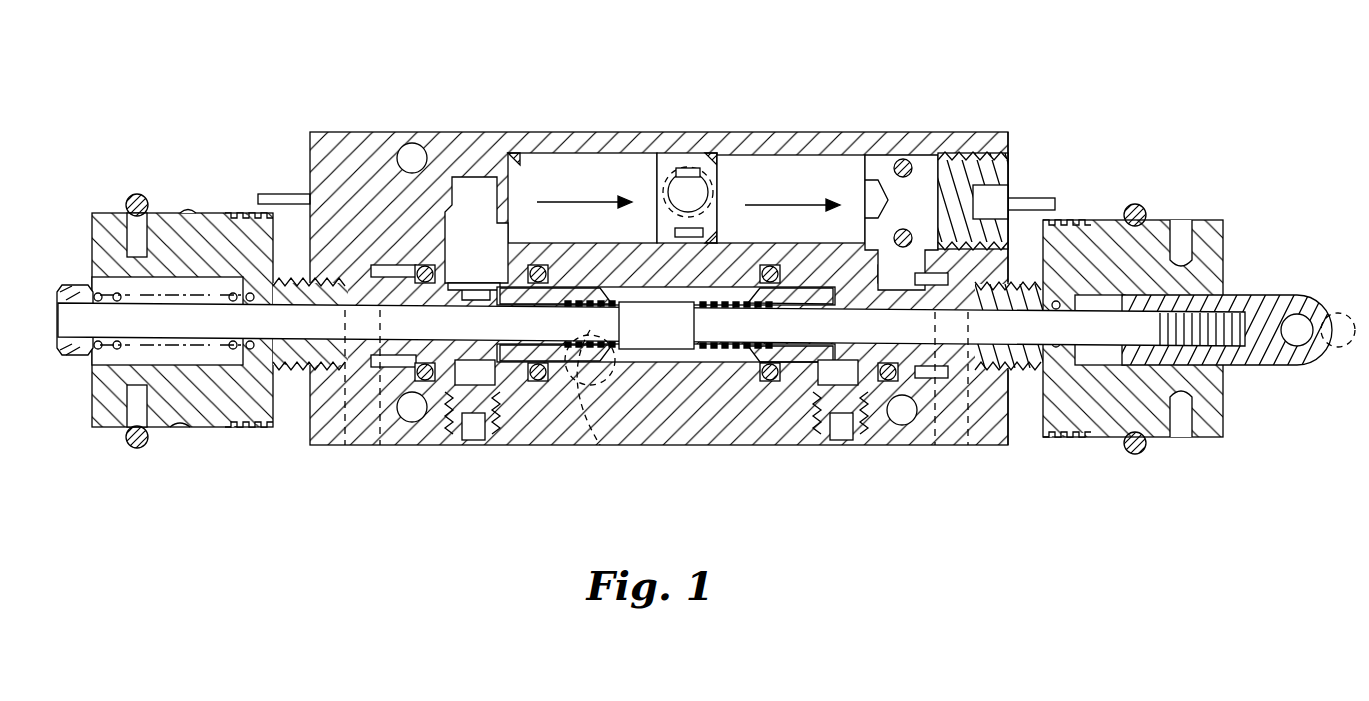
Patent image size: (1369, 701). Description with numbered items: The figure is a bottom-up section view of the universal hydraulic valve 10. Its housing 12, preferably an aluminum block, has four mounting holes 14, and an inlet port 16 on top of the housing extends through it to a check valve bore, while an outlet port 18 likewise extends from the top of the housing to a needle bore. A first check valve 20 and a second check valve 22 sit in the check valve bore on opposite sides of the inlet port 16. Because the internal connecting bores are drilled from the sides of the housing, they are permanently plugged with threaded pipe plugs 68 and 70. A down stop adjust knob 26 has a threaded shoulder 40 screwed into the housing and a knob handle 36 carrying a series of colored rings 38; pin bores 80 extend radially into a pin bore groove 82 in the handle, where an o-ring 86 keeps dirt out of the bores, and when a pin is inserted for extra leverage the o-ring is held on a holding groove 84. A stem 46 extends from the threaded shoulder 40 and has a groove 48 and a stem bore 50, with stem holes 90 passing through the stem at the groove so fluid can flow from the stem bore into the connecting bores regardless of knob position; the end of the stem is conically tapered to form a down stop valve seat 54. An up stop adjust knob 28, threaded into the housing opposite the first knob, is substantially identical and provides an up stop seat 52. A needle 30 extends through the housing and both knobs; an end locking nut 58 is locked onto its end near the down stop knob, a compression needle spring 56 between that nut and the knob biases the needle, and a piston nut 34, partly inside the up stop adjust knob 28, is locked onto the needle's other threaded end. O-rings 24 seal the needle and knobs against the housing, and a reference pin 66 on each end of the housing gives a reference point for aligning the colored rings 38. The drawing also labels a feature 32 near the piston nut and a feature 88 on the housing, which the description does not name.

The universal hydraulic valve 10 is at (613, 95).
The housing 12 is at (900, 145).
The mounting holes 14 is at (357, 450).
The inlet port 16 is at (686, 175).
The outlet port 18 is at (578, 395).
The first check valve 20 is at (775, 175).
The second check valve 22 is at (555, 175).
The O-rings 24 is at (770, 385).
The down stop adjust knob 26 is at (108, 437).
The up stop adjust knob 28 is at (1098, 440).
The needle 30 is at (683, 352).
The rod end collar 32 is at (1218, 302).
The piston nut 34 is at (1270, 360).
The knob handle 36 is at (112, 225).
The colored rings 38 is at (230, 213).
The threaded shoulder 40 is at (310, 372).
The stem 46 is at (418, 285).
The groove 48 is at (480, 378).
The stem bore 50 is at (600, 362).
The up stop seat 52 is at (745, 292).
The down stop valve seat 54 is at (572, 294).
The compression needle spring 56 is at (112, 350).
The end locking nut 58 is at (78, 288).
The reference pin 66 is at (290, 194).
The threaded pipe plug 68 is at (1000, 170).
The threaded pipe plug 70 is at (452, 445).
The pin bores 80 is at (120, 398).
The pin bore groove 82 is at (1180, 245).
The holding groove 84 is at (180, 440).
The o-ring 86 is at (137, 448).
The port 88 is at (415, 145).
The stem holes 90 is at (840, 375).